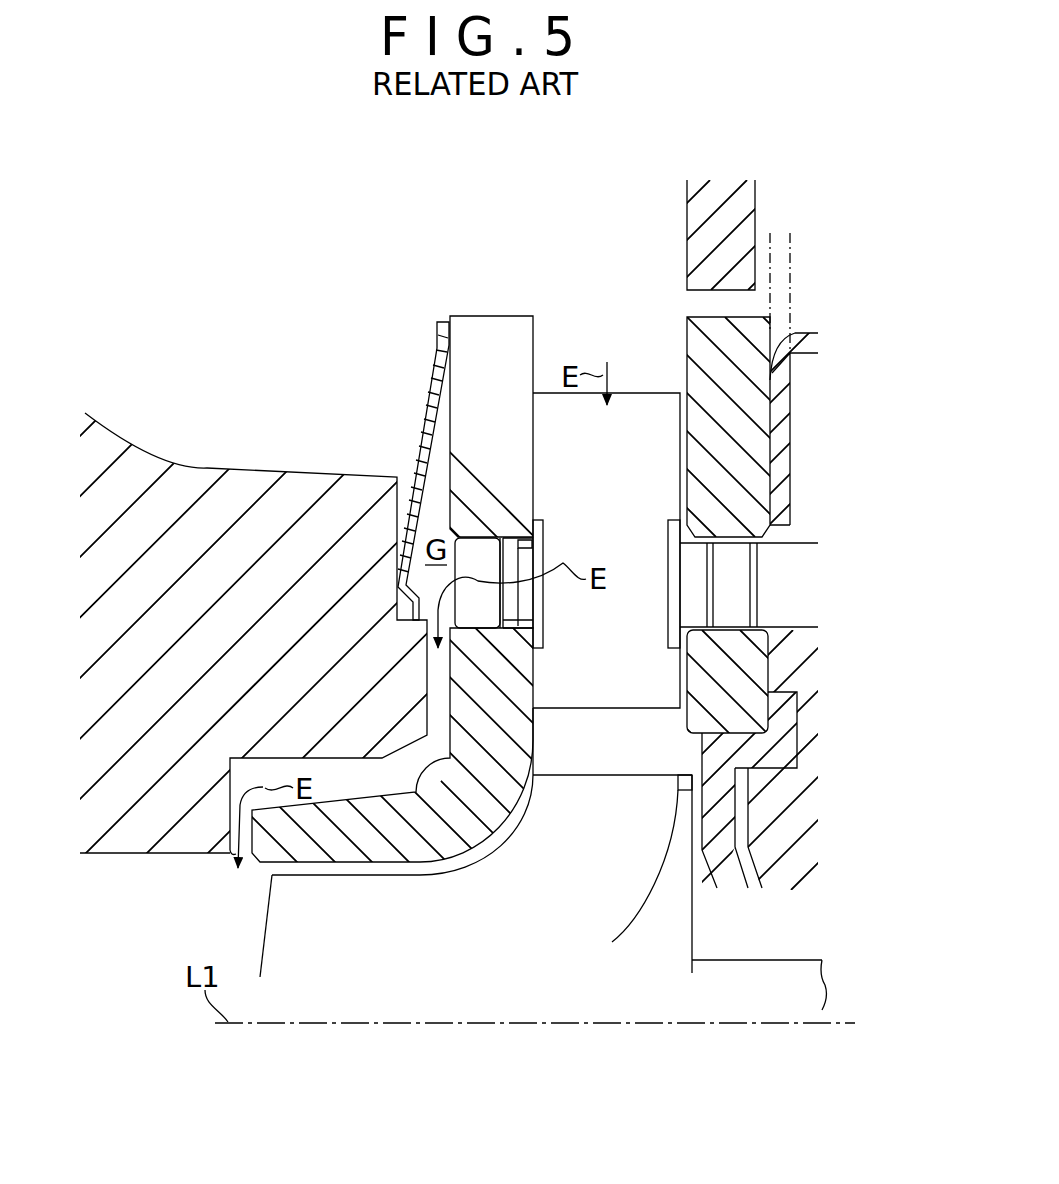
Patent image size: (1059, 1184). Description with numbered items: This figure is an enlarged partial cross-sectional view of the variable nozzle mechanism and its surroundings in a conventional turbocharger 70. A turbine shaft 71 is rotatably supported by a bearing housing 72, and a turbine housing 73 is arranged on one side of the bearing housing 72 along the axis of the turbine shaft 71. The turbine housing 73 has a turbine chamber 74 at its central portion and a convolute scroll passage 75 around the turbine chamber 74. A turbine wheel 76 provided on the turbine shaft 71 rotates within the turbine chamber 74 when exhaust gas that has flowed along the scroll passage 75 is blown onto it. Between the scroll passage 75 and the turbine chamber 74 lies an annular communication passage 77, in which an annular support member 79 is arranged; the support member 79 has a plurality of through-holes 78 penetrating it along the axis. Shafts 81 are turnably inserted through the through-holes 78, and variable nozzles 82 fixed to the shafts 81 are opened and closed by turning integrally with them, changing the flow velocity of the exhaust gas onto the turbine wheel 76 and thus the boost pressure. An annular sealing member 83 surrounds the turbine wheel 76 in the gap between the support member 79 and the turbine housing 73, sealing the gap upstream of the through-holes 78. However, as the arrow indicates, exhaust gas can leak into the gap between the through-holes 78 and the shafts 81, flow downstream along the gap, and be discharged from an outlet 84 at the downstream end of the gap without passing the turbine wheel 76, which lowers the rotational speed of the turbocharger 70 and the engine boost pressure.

The turbocharger 70 is at (311, 266).
The turbine shaft 71 is at (730, 970).
The bearing housing 72 is at (785, 873).
The turbine housing 73 is at (146, 462).
The turbine chamber 74 is at (400, 950).
The scroll passage 75 is at (537, 250).
The turbine wheel 76 is at (268, 931).
The communication passage 77 is at (671, 376).
The through-holes 78 is at (519, 544).
The support member 79 is at (487, 316).
The shafts 81 is at (522, 614).
The variable nozzles 82 is at (602, 697).
The sealing member 83 is at (427, 421).
The outlet 84 is at (229, 857).